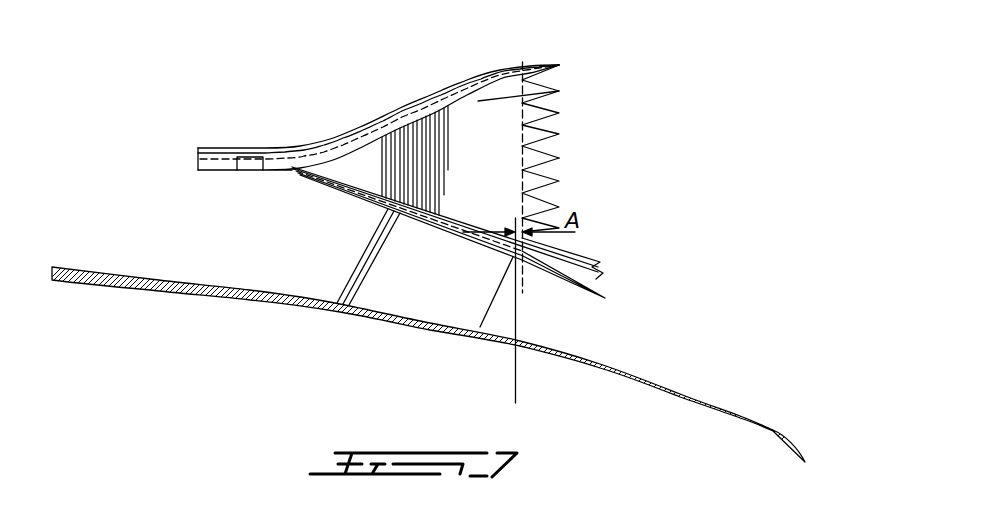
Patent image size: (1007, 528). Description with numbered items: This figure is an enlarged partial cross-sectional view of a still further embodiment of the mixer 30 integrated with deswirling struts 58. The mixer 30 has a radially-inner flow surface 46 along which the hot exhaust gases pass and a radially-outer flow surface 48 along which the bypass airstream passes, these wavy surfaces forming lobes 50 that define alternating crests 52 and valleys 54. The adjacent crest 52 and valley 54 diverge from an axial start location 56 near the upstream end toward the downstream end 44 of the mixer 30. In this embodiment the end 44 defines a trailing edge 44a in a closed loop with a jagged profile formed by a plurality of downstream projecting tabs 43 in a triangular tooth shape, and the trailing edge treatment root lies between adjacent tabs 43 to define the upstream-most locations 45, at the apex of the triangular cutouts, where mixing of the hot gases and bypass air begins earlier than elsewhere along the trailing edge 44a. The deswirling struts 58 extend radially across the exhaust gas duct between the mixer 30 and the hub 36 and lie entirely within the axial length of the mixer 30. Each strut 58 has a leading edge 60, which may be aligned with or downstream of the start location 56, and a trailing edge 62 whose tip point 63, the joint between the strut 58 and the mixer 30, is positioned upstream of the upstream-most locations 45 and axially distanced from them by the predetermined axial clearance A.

The mixer 30 is at (637, 112).
The hub 36 is at (633, 377).
The downstream projecting tabs 43 is at (560, 138).
The downstream end 44 is at (592, 278).
The trailing edge 44a is at (582, 246).
The upstream-most locations 45 is at (560, 186).
The radially-inner flow surface 46 is at (378, 200).
The radially-outer flow surface 48 is at (303, 157).
The lobes 50 is at (400, 108).
The crests 52 is at (467, 95).
The valleys 54 is at (332, 186).
The start location 56 is at (252, 157).
The deswirling struts 58 is at (414, 292).
The leading edge 60 is at (343, 264).
The trailing edge 62 is at (498, 308).
The tip point 63 is at (523, 268).